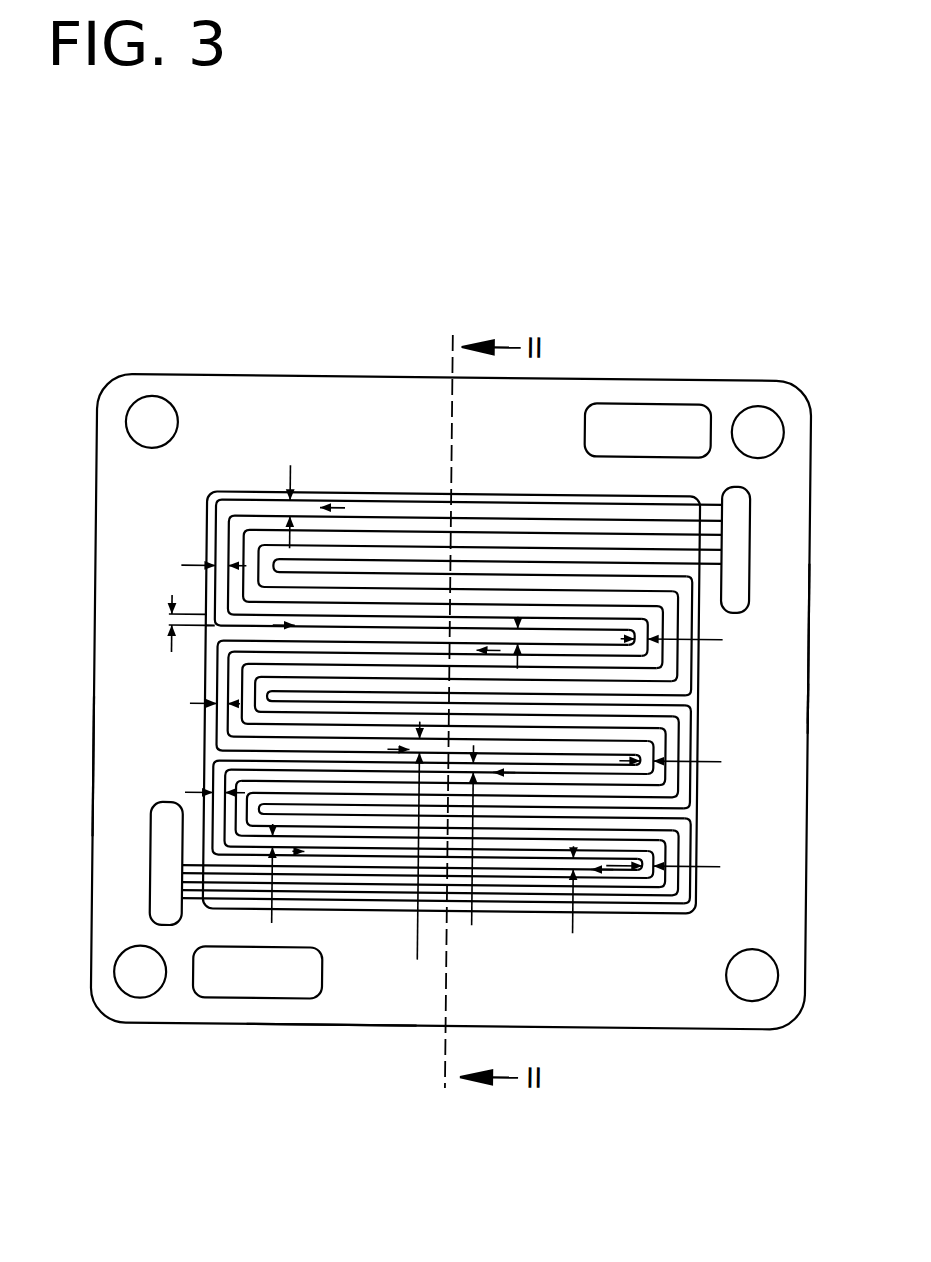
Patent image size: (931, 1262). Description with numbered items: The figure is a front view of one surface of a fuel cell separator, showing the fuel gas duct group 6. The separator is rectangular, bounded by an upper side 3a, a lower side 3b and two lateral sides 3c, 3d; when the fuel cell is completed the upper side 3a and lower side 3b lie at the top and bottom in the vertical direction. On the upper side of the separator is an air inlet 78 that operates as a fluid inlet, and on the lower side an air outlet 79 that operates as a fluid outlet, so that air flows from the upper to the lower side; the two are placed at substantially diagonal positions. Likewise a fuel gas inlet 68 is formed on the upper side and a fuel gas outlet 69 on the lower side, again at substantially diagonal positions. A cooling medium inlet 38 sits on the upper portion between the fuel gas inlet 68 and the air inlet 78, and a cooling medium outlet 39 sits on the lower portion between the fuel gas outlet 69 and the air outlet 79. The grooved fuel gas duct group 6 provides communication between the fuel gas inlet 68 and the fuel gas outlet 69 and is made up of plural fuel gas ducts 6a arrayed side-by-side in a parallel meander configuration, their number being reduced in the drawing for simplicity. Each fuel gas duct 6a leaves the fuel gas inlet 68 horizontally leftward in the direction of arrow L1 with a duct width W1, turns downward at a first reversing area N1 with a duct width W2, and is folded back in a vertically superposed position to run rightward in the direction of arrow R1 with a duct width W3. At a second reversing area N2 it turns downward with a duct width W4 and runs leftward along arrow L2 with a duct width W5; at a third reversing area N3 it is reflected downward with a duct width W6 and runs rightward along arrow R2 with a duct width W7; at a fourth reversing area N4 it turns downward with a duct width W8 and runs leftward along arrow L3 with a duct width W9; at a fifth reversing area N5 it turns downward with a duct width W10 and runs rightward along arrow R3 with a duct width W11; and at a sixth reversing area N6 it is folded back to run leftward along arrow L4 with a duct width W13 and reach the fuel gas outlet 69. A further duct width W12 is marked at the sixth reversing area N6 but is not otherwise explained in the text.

The upper side 3a is at (322, 378).
The lower side 3b is at (328, 1029).
The lateral side 3c is at (94, 772).
The lateral side 3d is at (809, 636).
The fuel gas duct group 6 is at (703, 502).
The fuel gas duct 6a is at (658, 525).
The cooling medium inlet 38 is at (764, 425).
The cooling medium outlet 39 is at (133, 988).
The fuel gas inlet 68 is at (808, 702).
The fuel gas outlet 69 is at (160, 875).
The air inlet 78 is at (647, 410).
The air outlet 79 is at (253, 1000).
The first reversing area N1 is at (204, 535).
The second reversing area N2 is at (668, 623).
The third reversing area N3 is at (203, 706).
The fourth reversing area N4 is at (669, 745).
The fifth reversing area N5 is at (208, 773).
The sixth reversing area N6 is at (694, 835).
The duct width W1 is at (299, 492).
The duct width W2 is at (189, 566).
The duct width W3 is at (174, 640).
The duct width W4 is at (689, 640).
The duct width W5 is at (517, 618).
The duct width W6 is at (193, 704).
The duct width W7 is at (416, 854).
The duct width W8 is at (689, 762).
The duct width W9 is at (472, 850).
The duct width W10 is at (183, 778).
The duct width W11 is at (270, 888).
The rib width dimension W12 is at (691, 867).
The duct width W13 is at (575, 906).
The arrow L1 is at (340, 507).
The arrow L2 is at (493, 650).
The arrow L3 is at (508, 772).
The arrow L4 is at (605, 868).
The arrow R1 is at (272, 627).
The arrow R2 is at (395, 751).
The arrow R3 is at (295, 855).